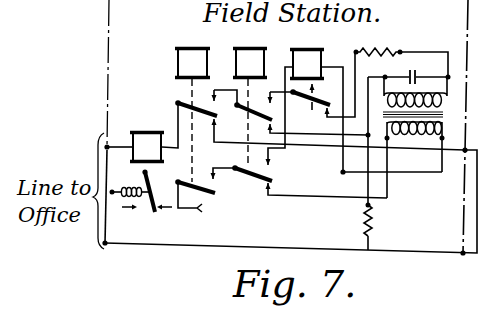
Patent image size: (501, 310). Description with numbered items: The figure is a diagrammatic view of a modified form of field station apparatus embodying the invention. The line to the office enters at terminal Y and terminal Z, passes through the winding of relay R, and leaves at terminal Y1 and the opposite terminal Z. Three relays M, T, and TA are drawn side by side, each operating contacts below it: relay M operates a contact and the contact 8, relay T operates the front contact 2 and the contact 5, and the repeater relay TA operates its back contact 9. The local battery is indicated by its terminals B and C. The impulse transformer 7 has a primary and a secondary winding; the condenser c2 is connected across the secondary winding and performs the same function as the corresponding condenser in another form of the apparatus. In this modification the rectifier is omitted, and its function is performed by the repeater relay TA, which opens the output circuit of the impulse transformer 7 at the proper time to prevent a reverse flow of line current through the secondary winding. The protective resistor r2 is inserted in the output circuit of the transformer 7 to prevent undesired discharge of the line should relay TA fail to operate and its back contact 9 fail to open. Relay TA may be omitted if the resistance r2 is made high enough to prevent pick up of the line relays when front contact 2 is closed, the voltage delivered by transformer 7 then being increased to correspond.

The relay M is at (196, 71).
The relay T is at (250, 52).
The repeater relay TA is at (307, 53).
The relay R is at (147, 137).
The line terminal Y is at (107, 147).
The line terminal Y1 is at (471, 140).
The line terminal Z is at (105, 245).
The front contact 2 is at (255, 111).
The contact 5 is at (254, 174).
The impulse transformer 7 is at (444, 128).
The contact 8 is at (196, 184).
The back contact 9 is at (323, 90).
The protective resistor r2 is at (383, 36).
The condenser c2 is at (417, 63).
The battery terminal C is at (343, 172).
The battery terminal B is at (199, 200).